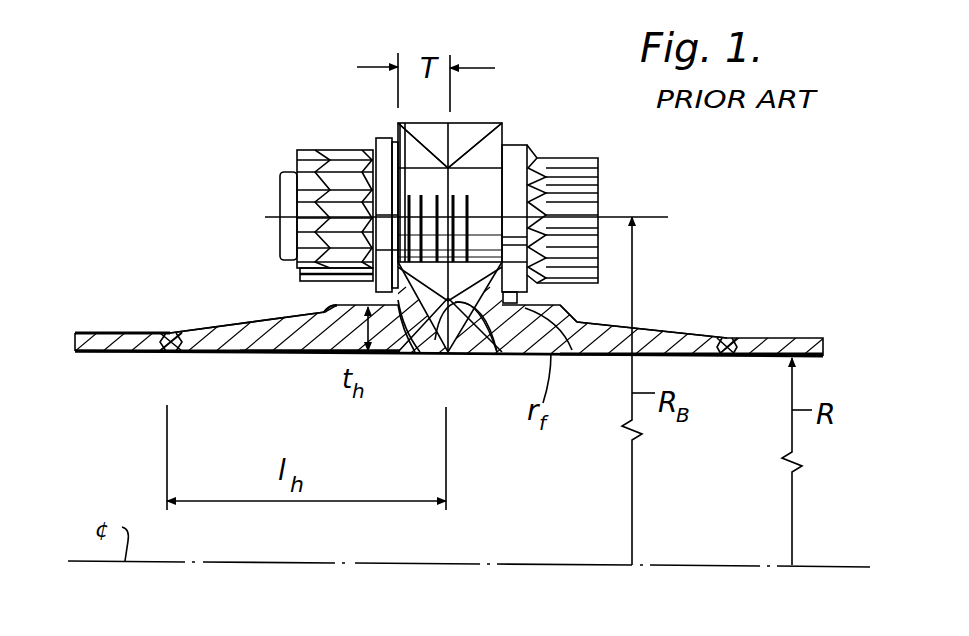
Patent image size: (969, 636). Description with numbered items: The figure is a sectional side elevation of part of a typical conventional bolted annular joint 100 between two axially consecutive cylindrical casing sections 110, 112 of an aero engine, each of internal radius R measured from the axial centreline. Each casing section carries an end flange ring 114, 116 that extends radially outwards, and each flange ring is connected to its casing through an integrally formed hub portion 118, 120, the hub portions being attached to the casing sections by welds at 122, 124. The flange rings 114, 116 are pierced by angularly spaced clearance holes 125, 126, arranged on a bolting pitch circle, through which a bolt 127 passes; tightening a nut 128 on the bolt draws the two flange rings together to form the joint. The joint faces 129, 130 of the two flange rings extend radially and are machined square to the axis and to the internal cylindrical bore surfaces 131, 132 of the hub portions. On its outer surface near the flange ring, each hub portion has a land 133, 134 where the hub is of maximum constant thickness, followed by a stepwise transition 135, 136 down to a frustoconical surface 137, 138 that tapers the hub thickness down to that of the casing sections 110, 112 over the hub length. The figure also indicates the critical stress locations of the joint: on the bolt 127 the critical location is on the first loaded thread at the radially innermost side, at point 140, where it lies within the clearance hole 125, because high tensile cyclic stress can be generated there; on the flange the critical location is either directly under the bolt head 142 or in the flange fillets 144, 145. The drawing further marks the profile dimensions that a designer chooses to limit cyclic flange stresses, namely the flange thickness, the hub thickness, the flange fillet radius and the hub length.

The bolted annular joint 100 is at (318, 114).
The casing section 110 is at (110, 333).
The casing section 112 is at (783, 336).
The end flange ring 114 is at (420, 124).
The end flange ring 116 is at (454, 169).
The hub portion 118 is at (260, 332).
The hub portion 120 is at (697, 337).
The weld 122 is at (170, 330).
The weld 124 is at (733, 332).
The clearance hole 125 is at (392, 139).
The clearance hole 126 is at (510, 141).
The bolt 127 is at (422, 205).
The nut 128 is at (308, 153).
The joint face 129 is at (429, 353).
The joint face 130 is at (489, 354).
The internal cylindrical bore surface 131 is at (254, 354).
The internal cylindrical bore surface 132 is at (628, 355).
The land 133 is at (337, 355).
The land 134 is at (615, 353).
The stepwise transition 135 is at (325, 310).
The stepwise transition 136 is at (575, 318).
The frustoconical surface 137 is at (201, 324).
The frustoconical surface 138 is at (661, 334).
The critical stress point 140 is at (373, 267).
The bolt head 142 is at (598, 160).
The flange fillet 144 is at (410, 355).
The flange fillet 145 is at (492, 352).